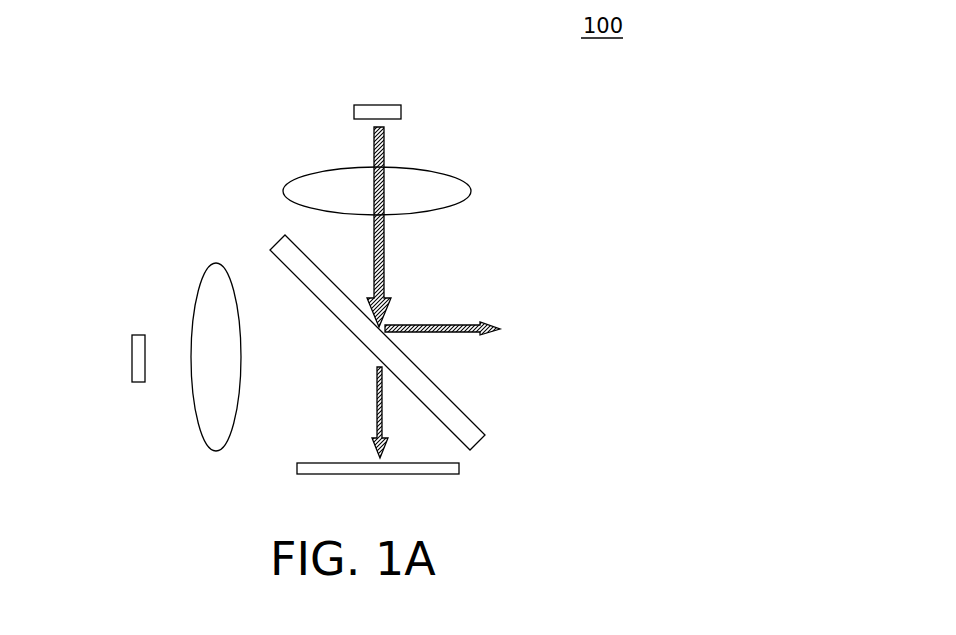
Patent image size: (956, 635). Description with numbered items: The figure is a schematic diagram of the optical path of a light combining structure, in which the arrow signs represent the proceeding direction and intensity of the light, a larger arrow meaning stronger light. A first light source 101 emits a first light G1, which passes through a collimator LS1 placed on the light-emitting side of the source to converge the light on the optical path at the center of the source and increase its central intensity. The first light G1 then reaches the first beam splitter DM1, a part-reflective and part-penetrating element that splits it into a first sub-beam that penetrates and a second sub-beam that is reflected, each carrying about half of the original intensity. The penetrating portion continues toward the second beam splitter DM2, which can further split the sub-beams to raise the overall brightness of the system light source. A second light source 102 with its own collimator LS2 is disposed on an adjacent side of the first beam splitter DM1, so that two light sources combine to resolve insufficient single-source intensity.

The first light source 101 is at (375, 105).
The second light source 102 is at (132, 355).
The collimator LS1 is at (442, 170).
The collimator LS2 is at (217, 263).
The first beam splitter DM1 is at (460, 410).
The second beam splitter DM2 is at (428, 474).
The first light G1 is at (384, 253).